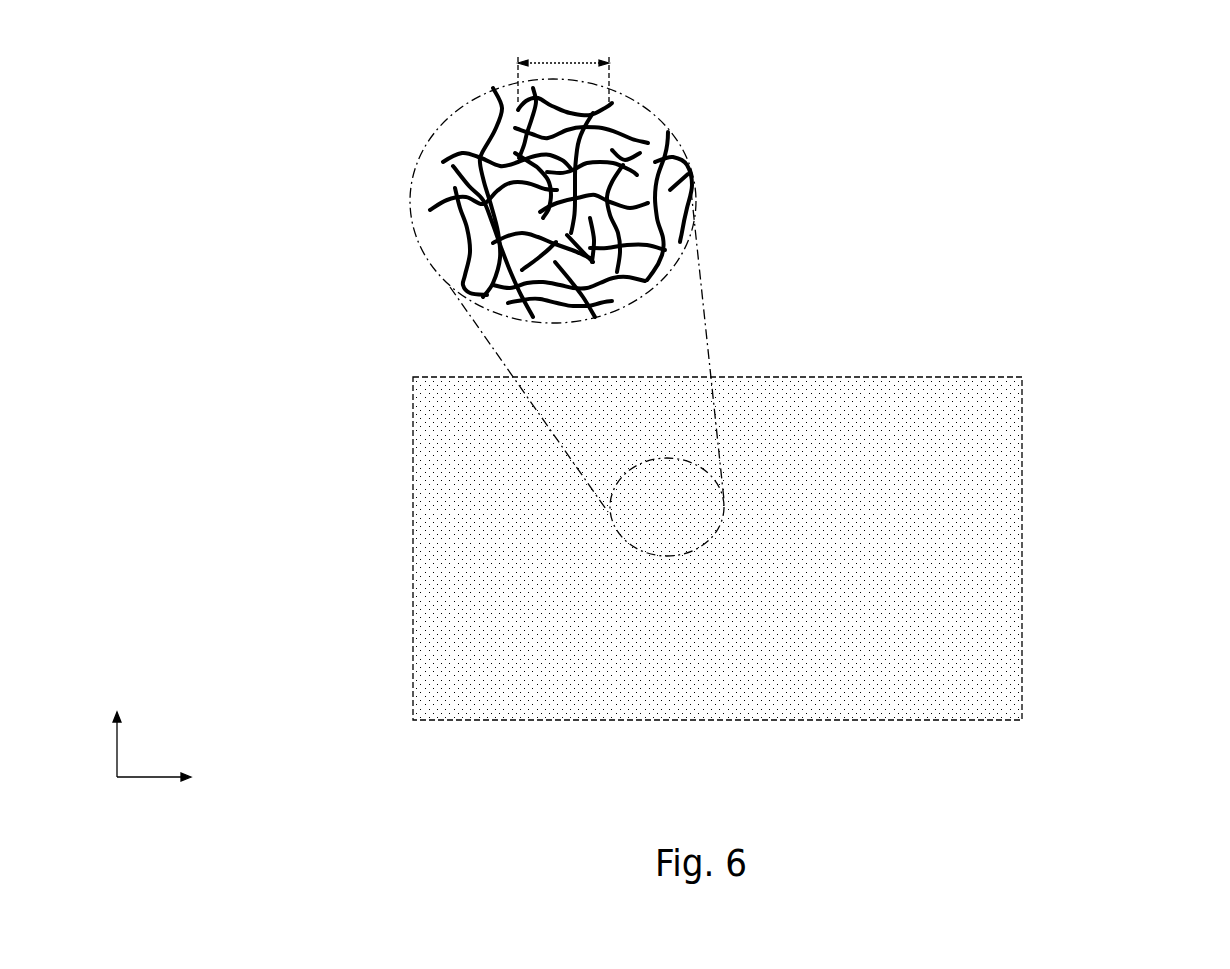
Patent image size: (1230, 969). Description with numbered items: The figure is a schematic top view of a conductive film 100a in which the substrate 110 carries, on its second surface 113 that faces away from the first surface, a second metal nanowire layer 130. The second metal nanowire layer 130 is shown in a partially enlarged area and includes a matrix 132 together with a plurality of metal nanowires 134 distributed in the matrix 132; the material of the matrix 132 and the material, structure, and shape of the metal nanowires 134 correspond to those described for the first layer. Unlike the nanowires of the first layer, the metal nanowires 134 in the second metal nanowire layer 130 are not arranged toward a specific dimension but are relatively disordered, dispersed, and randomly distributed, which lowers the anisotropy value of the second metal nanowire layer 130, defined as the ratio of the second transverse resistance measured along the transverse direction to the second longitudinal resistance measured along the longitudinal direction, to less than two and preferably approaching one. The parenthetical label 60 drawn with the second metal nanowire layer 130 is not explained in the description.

The conductive film 100a is at (272, 72).
The substrate 110 is at (807, 455).
The second surface 113 is at (1022, 553).
The second metal nanowire layer 130 is at (691, 202).
The fiber layer 60 is at (828, 95).
The matrix 132 is at (687, 185).
The metal nanowires 134 is at (667, 147).